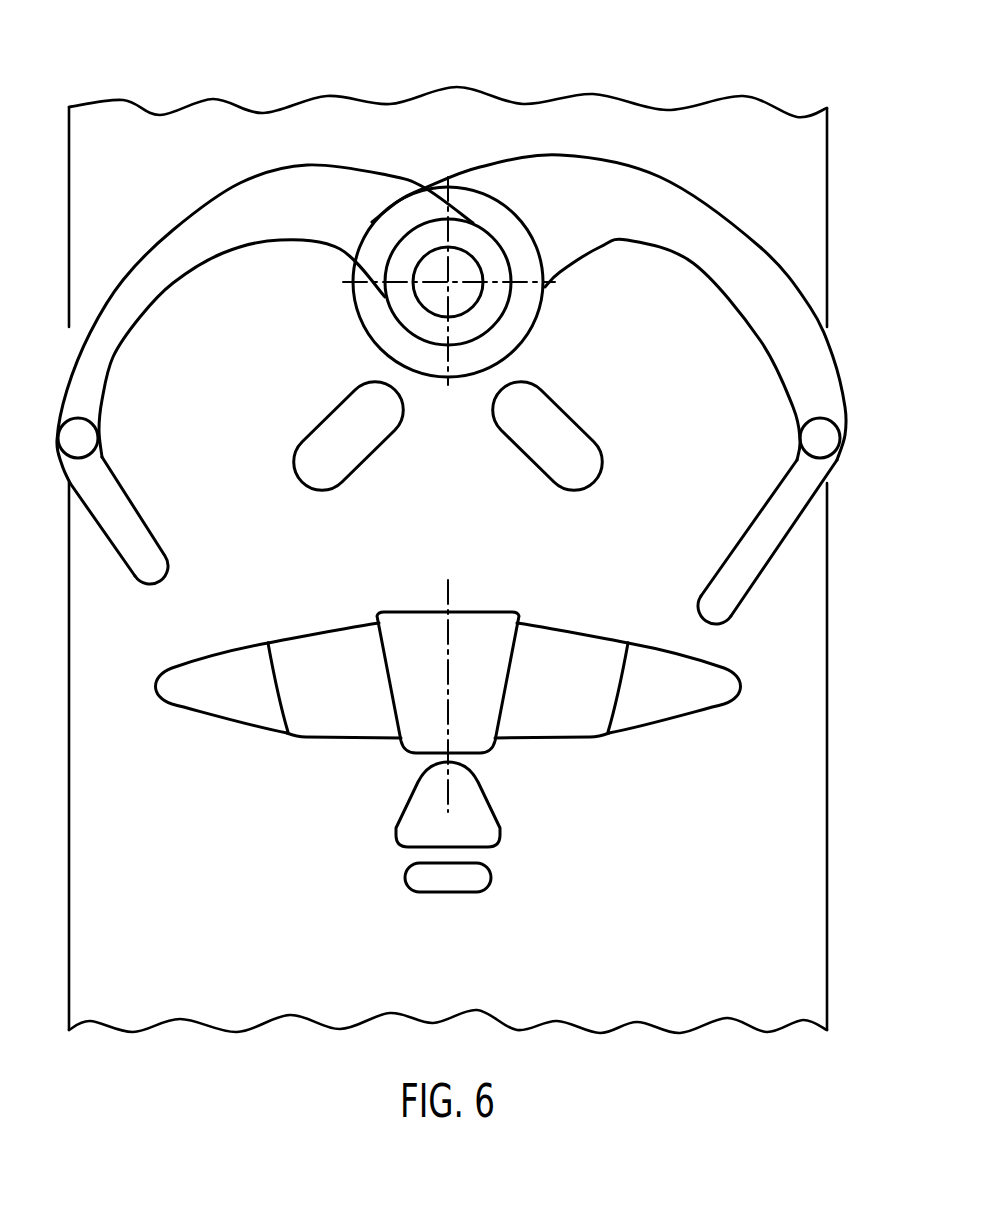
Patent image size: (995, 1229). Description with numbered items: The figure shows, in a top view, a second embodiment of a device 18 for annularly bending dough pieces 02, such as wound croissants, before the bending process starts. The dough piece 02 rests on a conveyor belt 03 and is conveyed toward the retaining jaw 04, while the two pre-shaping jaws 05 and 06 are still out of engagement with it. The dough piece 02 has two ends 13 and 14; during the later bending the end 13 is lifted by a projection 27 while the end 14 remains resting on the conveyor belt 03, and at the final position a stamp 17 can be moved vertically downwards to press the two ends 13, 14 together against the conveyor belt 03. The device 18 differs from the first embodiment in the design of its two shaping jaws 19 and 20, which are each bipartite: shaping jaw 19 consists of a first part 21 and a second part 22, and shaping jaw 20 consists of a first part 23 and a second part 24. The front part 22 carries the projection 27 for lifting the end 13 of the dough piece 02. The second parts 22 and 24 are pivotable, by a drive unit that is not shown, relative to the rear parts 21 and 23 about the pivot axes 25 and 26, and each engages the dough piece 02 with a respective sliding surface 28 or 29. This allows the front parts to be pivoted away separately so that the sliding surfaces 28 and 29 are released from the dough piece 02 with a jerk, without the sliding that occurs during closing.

The device 18 is at (636, 61).
The conveyor belt 03 is at (643, 1012).
The dough piece 02 is at (448, 676).
The retaining jaw 04 is at (490, 815).
The pre-shaping jaw 05 is at (331, 479).
The pre-shaping jaw 06 is at (564, 479).
The end of the dough piece 13 is at (700, 703).
The end of the dough piece 14 is at (195, 705).
The stamp 17 is at (478, 875).
The shaping jaw 19 is at (609, 406).
The shaping jaw 20 is at (265, 412).
The first part of the shaping jaw 21 is at (740, 287).
The second part of the shaping jaw 22 is at (755, 565).
The first part of the shaping jaw 23 is at (157, 287).
The second part of the shaping jaw 24 is at (140, 567).
The pivot axis 25 is at (812, 442).
The pivot axis 26 is at (83, 442).
The projection 27 is at (716, 592).
The sliding surface 28 is at (733, 582).
The sliding surface 29 is at (162, 585).